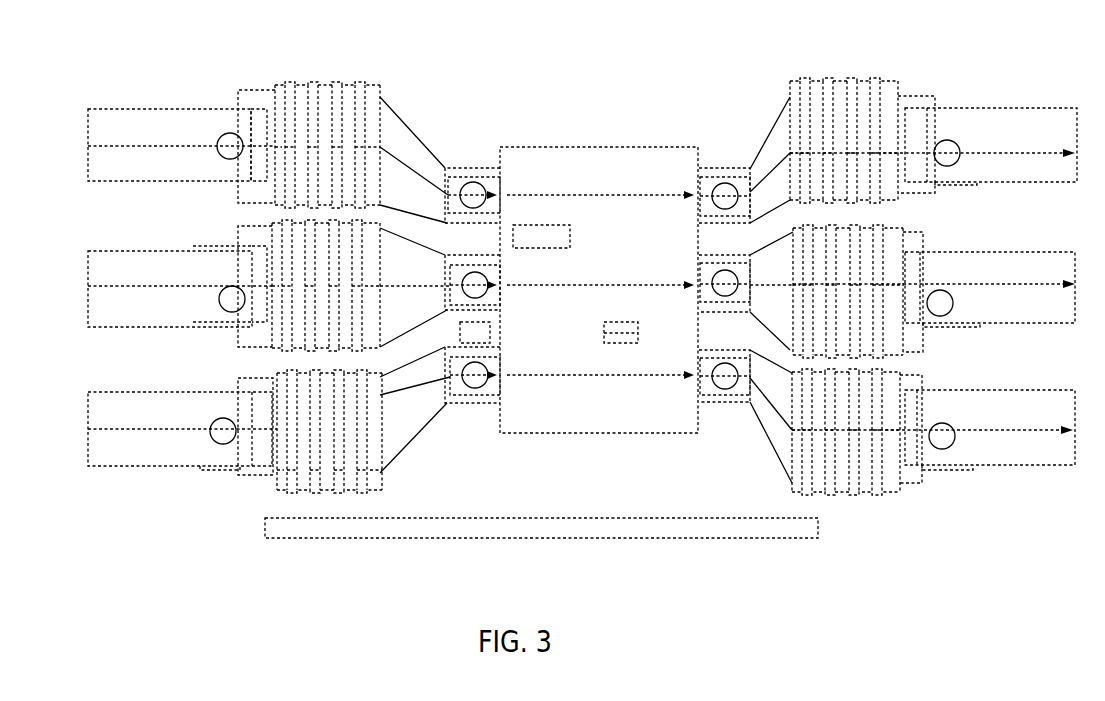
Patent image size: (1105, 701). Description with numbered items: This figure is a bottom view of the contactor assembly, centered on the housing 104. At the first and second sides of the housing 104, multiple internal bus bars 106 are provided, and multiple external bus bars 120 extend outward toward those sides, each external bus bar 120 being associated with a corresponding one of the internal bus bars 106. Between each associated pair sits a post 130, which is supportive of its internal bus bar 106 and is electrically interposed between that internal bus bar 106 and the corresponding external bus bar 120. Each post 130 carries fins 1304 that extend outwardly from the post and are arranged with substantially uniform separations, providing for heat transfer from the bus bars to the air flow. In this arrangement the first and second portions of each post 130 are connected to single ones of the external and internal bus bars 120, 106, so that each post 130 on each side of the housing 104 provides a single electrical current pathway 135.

The housing 104 is at (580, 147).
The internal bus bar 106 is at (470, 168).
The external bus bar 120 is at (140, 120).
The post 130 is at (383, 118).
The electrical current pathway 135 is at (407, 167).
The fins 1304 is at (328, 85).